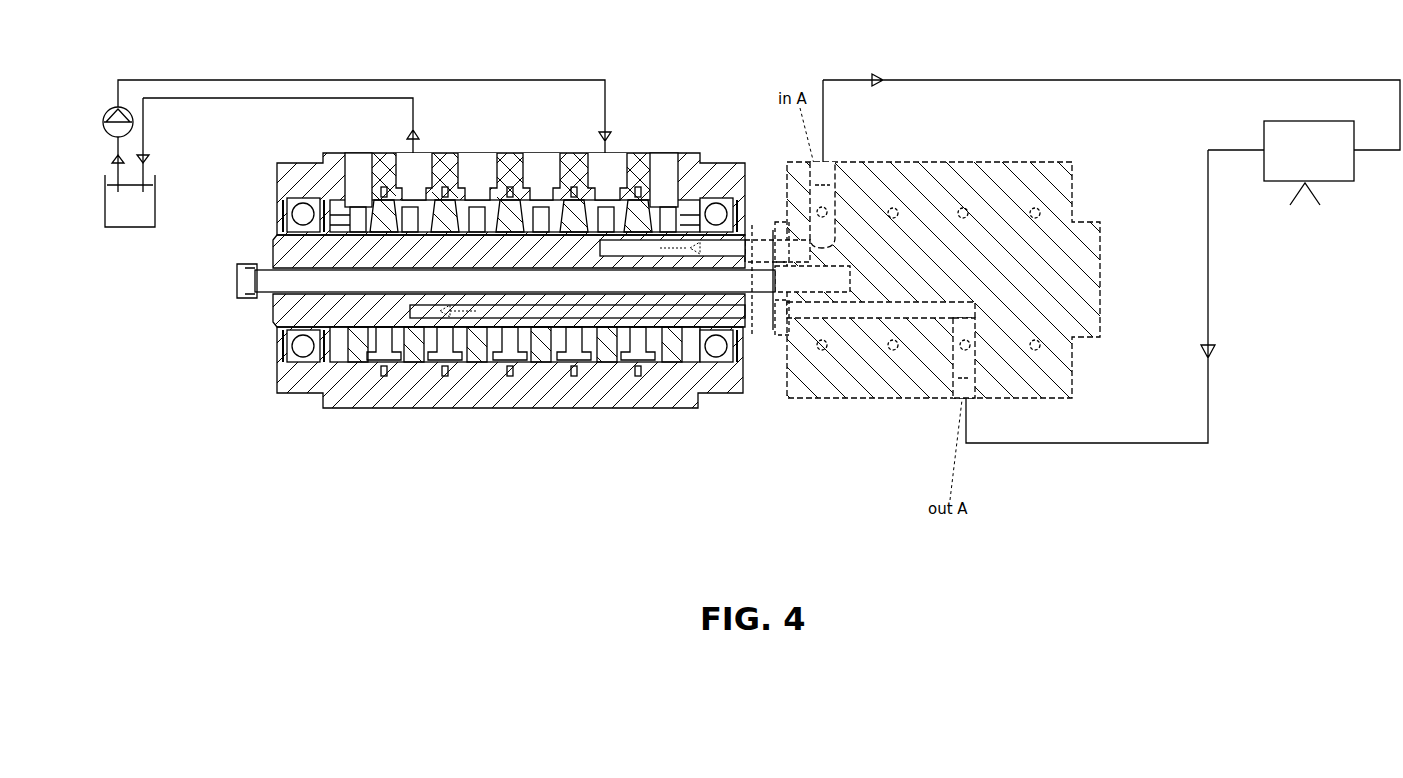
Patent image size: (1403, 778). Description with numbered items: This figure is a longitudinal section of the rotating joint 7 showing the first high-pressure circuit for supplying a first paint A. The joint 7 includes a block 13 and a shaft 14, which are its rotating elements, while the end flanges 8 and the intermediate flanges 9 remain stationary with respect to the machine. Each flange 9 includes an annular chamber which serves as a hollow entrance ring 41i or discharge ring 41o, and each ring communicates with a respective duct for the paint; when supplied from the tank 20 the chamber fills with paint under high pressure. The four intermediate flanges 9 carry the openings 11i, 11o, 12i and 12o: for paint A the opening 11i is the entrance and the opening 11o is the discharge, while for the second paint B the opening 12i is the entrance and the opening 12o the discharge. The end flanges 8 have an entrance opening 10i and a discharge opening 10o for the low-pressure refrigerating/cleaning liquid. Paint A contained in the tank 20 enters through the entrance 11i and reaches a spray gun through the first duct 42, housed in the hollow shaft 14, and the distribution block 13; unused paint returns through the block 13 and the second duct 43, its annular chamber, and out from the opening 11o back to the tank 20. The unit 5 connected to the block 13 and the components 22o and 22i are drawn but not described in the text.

The hydraulic unit / pump controller 5 is at (1330, 163).
The rotating joint 7 is at (455, 293).
The end flanges 8 is at (300, 382).
The flanges 9 is at (416, 380).
The discharge opening 10o is at (358, 172).
The entrance opening 10i is at (660, 172).
The opening 11o is at (408, 168).
The opening 11i is at (608, 160).
The opening 12o is at (477, 168).
The opening 12i is at (545, 168).
The block 13 is at (915, 368).
The shaft 14 is at (283, 307).
The tank 20 is at (128, 200).
The outer seal 22o is at (395, 338).
The inner seal 22i is at (605, 335).
The discharge ring 41o is at (420, 235).
The entrance ring 41i is at (632, 330).
The first duct 42 is at (728, 248).
The second duct 43 is at (495, 312).